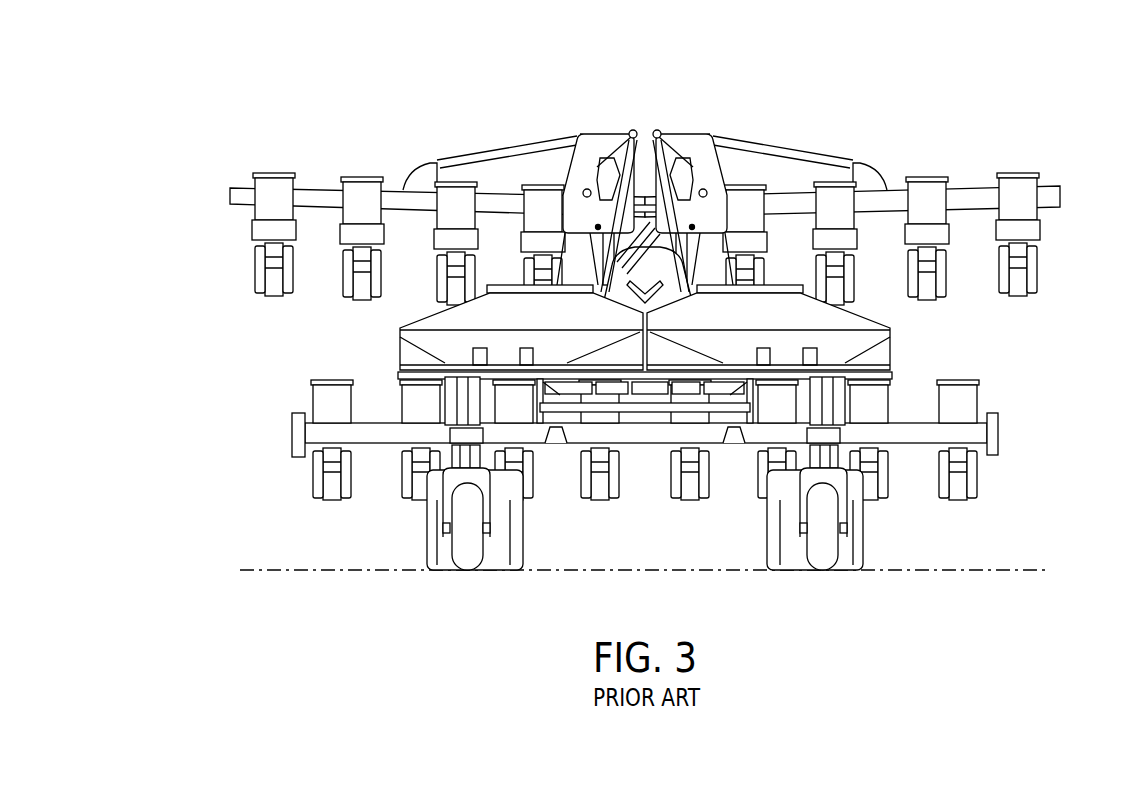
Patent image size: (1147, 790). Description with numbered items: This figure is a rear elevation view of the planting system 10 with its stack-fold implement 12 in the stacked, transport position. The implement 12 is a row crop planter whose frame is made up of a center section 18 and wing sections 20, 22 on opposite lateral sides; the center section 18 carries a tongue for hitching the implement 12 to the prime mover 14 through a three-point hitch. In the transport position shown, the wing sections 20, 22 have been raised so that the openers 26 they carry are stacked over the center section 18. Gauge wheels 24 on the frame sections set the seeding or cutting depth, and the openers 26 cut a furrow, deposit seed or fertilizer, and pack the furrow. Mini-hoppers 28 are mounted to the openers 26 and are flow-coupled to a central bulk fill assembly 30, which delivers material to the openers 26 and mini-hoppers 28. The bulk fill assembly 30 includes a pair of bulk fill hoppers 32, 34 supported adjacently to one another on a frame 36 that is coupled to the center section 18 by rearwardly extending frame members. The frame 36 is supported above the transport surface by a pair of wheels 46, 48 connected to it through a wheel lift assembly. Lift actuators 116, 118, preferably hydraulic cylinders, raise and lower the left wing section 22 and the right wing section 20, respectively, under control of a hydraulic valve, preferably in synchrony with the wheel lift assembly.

The planting system 10 is at (200, 108).
The stack-fold implement 12 is at (1084, 221).
The prime mover 14 is at (647, 201).
The center section 18 is at (992, 435).
The wing section 20 is at (963, 200).
The wing section 22 is at (318, 203).
The gauge wheels 24 is at (1033, 288).
The openers 26 is at (269, 290).
The mini-hoppers 28 is at (272, 186).
The central bulk fill assembly 30 is at (781, 262).
The bulk fill hopper 32 is at (398, 333).
The bulk fill hopper 34 is at (887, 335).
The frame 36 is at (909, 382).
The wheel 46 is at (472, 553).
The wheel 48 is at (820, 553).
The lift actuator 116 is at (594, 165).
The lift actuator 118 is at (690, 160).